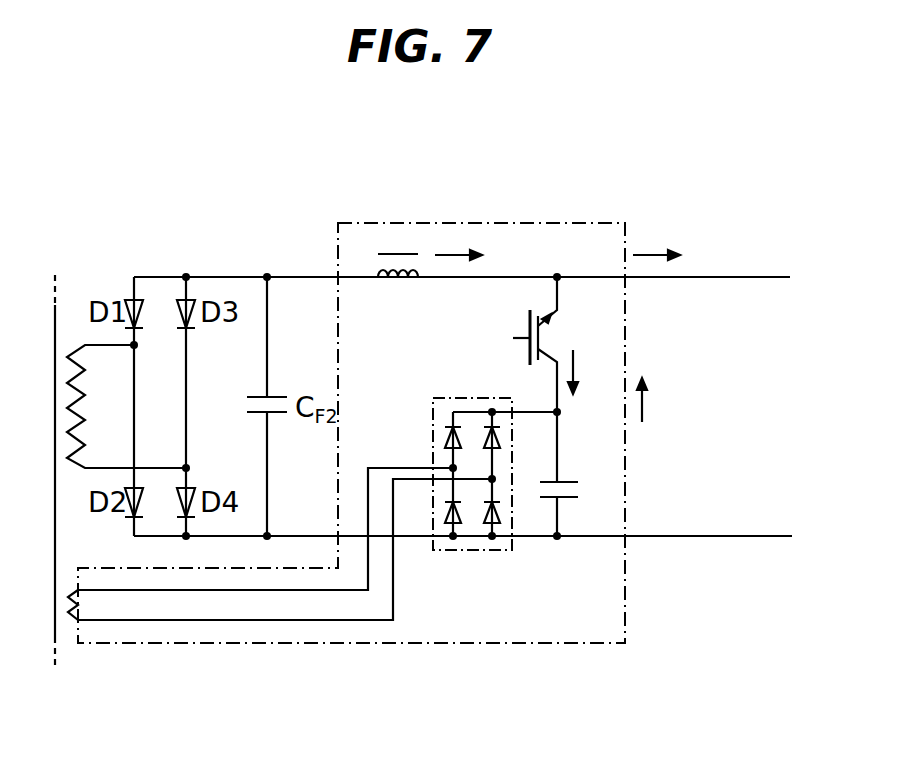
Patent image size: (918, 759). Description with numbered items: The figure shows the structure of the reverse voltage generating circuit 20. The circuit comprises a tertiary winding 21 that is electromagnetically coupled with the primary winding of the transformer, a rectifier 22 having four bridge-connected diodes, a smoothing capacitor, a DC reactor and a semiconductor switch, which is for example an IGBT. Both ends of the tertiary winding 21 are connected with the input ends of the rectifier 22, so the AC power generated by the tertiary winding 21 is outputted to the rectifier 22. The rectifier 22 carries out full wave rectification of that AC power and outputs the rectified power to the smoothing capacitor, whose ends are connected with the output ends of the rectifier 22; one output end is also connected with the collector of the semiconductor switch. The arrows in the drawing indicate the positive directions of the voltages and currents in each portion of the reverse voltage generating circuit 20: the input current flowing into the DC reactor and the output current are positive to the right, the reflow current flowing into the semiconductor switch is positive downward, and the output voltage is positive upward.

The reverse voltage generating circuit 20 is at (502, 222).
The tertiary winding 21 is at (73, 630).
The rectifier 22 is at (478, 552).